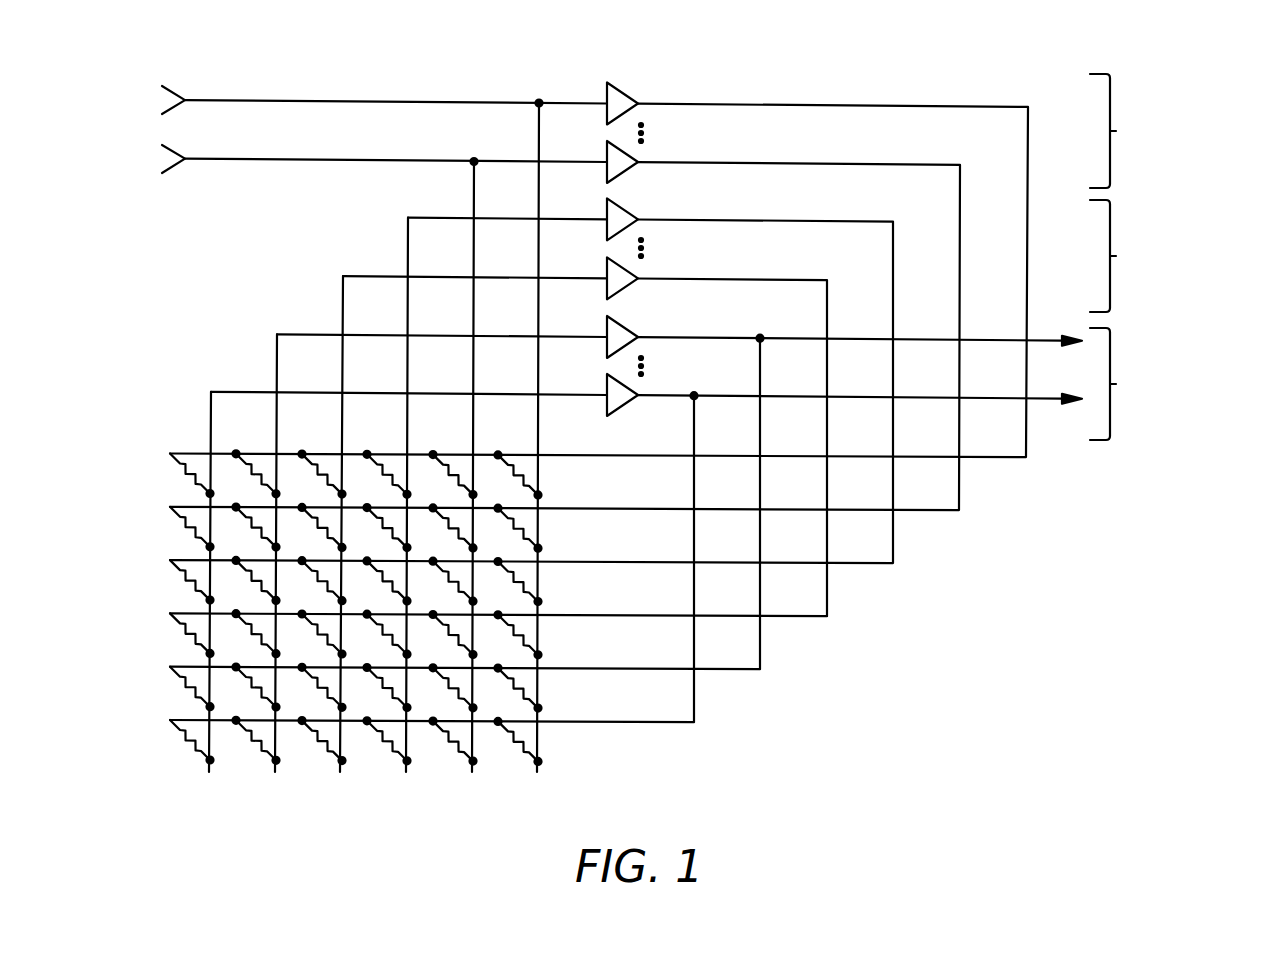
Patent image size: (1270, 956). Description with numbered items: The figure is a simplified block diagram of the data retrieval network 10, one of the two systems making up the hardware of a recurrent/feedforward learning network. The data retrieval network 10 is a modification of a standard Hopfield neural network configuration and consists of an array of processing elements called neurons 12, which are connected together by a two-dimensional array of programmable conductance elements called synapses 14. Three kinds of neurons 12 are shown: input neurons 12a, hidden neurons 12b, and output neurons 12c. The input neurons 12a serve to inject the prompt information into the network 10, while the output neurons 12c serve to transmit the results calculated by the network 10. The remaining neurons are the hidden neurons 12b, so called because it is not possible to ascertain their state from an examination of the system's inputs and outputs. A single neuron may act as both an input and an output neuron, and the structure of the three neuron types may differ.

The data retrieval network 10 is at (701, 433).
The neurons 12 is at (650, 228).
The input neurons 12a is at (606, 160).
The hidden neurons 12b is at (606, 281).
The output neurons 12c is at (606, 399).
The synapses 14 is at (250, 748).